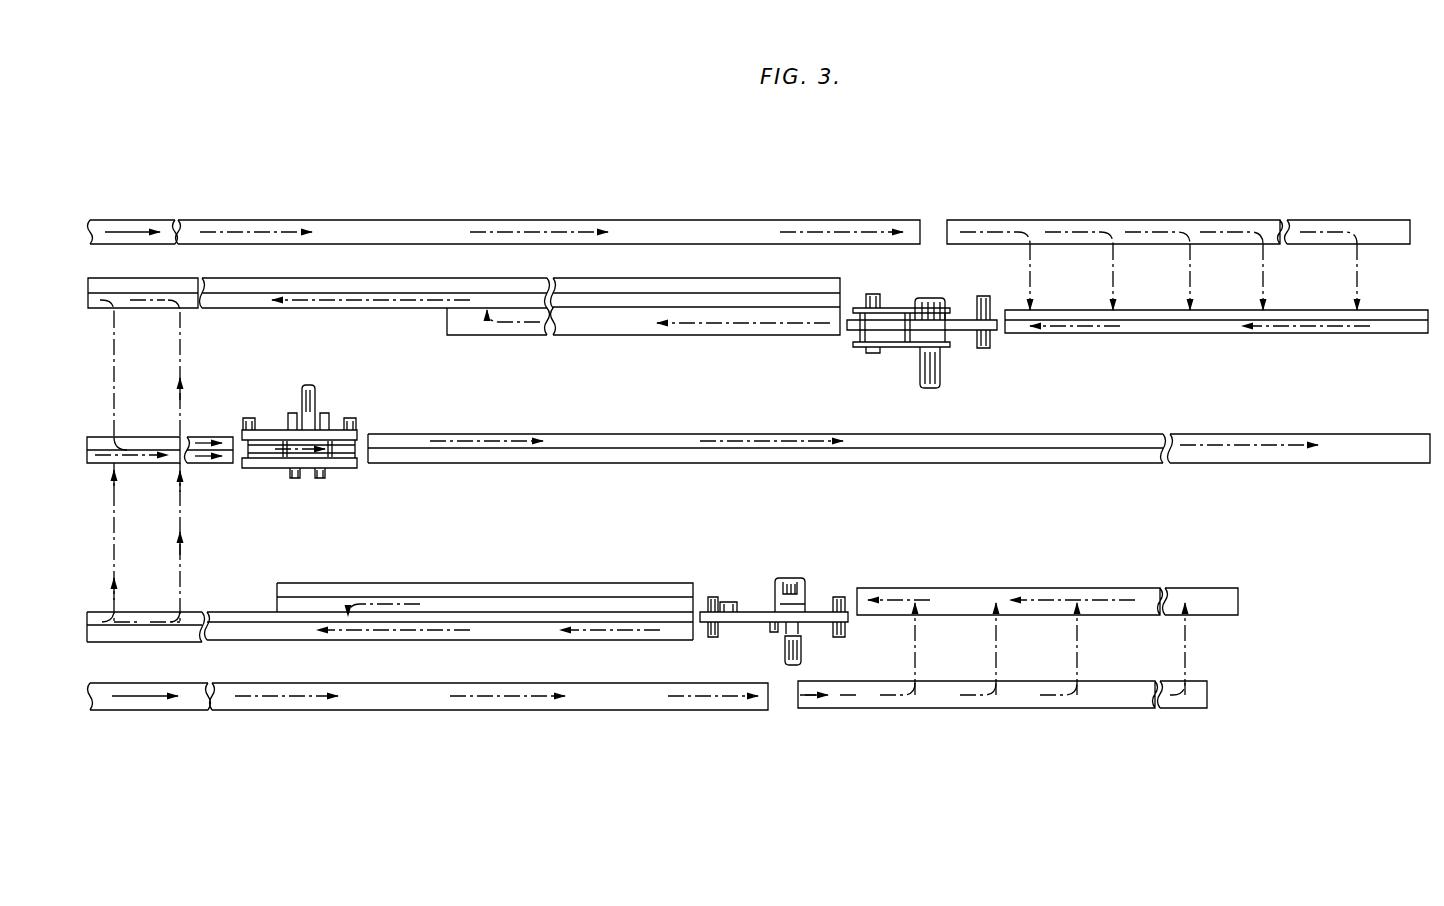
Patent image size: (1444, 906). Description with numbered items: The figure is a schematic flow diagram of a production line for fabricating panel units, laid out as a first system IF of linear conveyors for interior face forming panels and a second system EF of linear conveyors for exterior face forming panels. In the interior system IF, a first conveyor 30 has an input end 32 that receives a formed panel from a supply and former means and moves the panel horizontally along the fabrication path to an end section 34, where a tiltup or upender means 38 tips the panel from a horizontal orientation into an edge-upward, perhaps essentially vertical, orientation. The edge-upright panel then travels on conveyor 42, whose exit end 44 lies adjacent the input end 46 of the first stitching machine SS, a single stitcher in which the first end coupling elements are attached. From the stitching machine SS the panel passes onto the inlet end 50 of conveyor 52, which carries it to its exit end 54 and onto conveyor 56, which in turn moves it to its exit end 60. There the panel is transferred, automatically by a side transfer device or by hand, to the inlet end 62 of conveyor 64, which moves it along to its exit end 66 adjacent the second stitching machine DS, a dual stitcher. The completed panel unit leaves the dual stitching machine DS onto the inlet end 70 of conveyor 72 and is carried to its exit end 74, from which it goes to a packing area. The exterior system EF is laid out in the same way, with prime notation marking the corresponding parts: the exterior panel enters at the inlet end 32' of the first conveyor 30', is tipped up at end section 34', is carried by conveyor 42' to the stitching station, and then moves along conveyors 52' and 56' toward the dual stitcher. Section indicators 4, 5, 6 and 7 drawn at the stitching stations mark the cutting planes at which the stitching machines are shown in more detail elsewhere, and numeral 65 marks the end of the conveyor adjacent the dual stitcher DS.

The first conveyor 30 is at (548, 208).
The input end 32 is at (133, 212).
The end section 34 is at (1178, 238).
The upender means 38 is at (1218, 294).
The conveyor 42 is at (1216, 349).
The exit end 44 is at (1028, 342).
The input end 46 is at (996, 318).
The inlet end 50 is at (843, 352).
The conveyor 52 is at (696, 332).
The exit end 54 is at (470, 340).
The conveyor 56 is at (375, 278).
The exit end 60 is at (100, 318).
The inlet end 62 is at (98, 470).
The conveyor 64 is at (155, 472).
The conveyor end 65 is at (232, 466).
The exit end 66 is at (223, 434).
The inlet end 70 is at (372, 470).
The conveyor 72 is at (468, 470).
The exit end 74 is at (1410, 468).
The first conveyor 30' is at (489, 733).
The inlet end 32' is at (149, 739).
The end section 34' is at (1002, 725).
The conveyor 42' is at (1047, 624).
The conveyor 52' is at (485, 593).
The conveyor 56' is at (390, 601).
The first stitching machine SS is at (900, 356).
The second stitching machine DS is at (305, 482).
The first system of linear conveyors IF is at (540, 208).
The second system of linear conveyors EF is at (528, 722).
The section line 4- 4 is at (836, 312).
The section line 5- 5 is at (697, 603).
The section line 6- 6 is at (1018, 265).
The section line 7- 7 is at (216, 395).